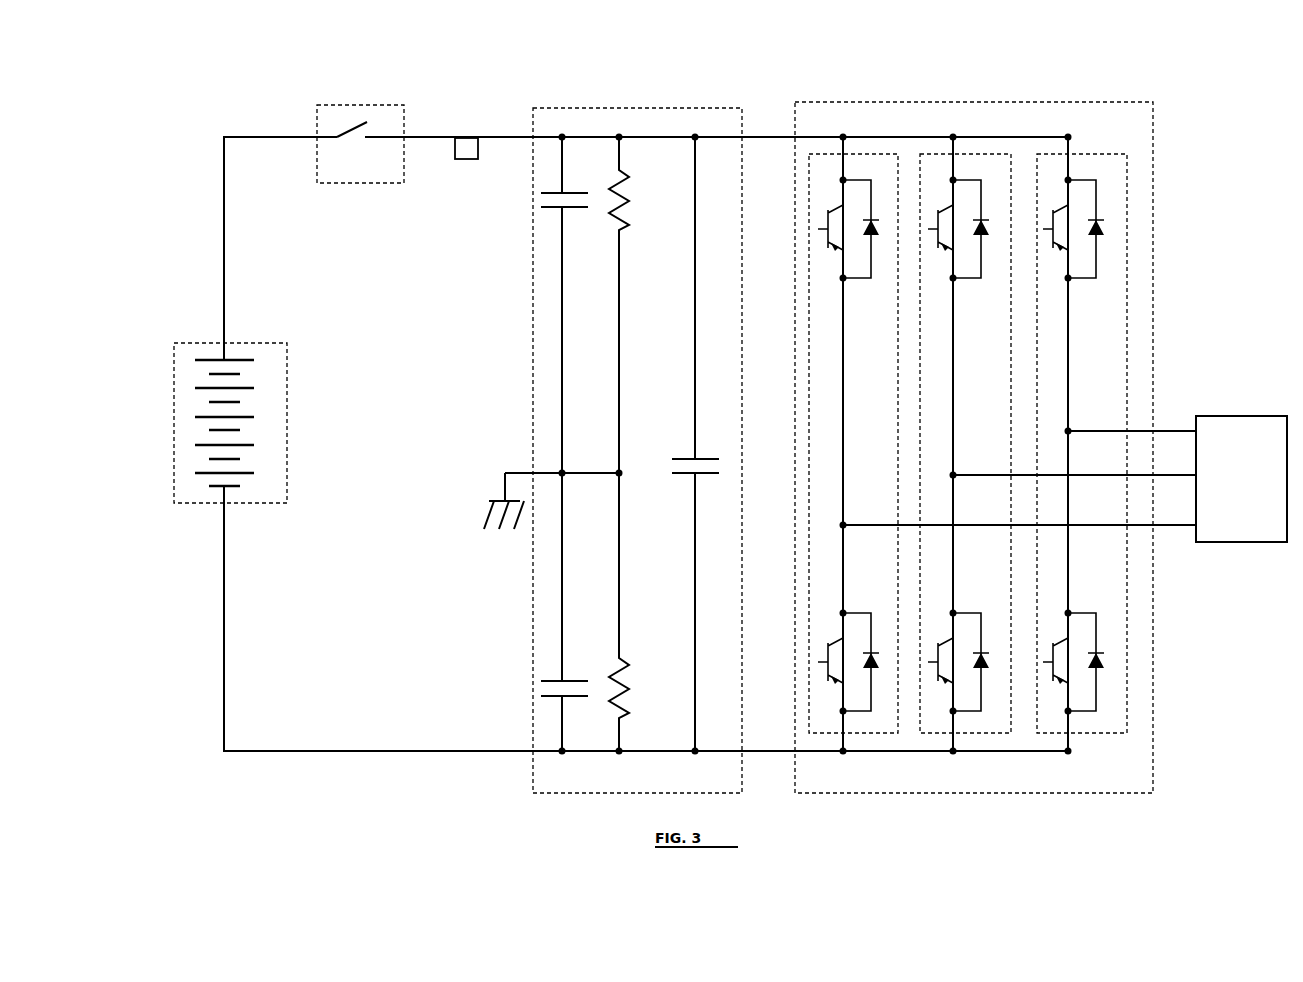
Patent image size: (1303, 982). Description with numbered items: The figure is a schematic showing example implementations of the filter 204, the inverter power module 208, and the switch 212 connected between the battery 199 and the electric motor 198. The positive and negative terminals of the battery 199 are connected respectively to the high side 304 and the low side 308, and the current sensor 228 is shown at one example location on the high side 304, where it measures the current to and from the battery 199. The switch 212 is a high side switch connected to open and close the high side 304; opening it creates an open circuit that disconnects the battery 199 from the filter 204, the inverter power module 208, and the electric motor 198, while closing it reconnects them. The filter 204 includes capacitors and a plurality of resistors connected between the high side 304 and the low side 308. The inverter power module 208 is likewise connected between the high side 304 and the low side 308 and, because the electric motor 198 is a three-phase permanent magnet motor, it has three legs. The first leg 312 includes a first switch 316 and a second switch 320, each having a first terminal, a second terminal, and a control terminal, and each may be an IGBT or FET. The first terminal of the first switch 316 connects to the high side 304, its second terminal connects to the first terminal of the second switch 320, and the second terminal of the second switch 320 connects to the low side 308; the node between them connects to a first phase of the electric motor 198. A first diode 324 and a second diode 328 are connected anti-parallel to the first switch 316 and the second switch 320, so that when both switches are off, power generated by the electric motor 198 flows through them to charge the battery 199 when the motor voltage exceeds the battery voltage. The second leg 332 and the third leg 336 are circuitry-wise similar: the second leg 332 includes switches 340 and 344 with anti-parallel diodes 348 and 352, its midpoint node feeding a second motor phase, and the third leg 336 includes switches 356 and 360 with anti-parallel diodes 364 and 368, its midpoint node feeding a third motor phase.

The electric motor 198 is at (1240, 542).
The battery 199 is at (288, 404).
The filter 204 is at (615, 108).
The inverter power module 208 is at (1153, 111).
The switch 212 is at (356, 105).
The current sensor 228 is at (469, 159).
The high side 304 is at (250, 137).
The low side 308 is at (254, 751).
The first leg 312 is at (972, 430).
The first switch 316 is at (819, 202).
The second switch 320 is at (819, 635).
The first diode 324 is at (876, 212).
The second diode 328 is at (876, 633).
The second leg 332 is at (1024, 430).
The third leg 336 is at (1085, 437).
The switch 340 is at (940, 204).
The switch 344 is at (938, 635).
The anti-parallel diode 348 is at (987, 212).
The anti-parallel diode 352 is at (988, 638).
The switch 356 is at (1056, 204).
The switch 360 is at (1053, 635).
The anti-parallel diode 364 is at (1108, 224).
The anti-parallel diode 368 is at (1108, 658).